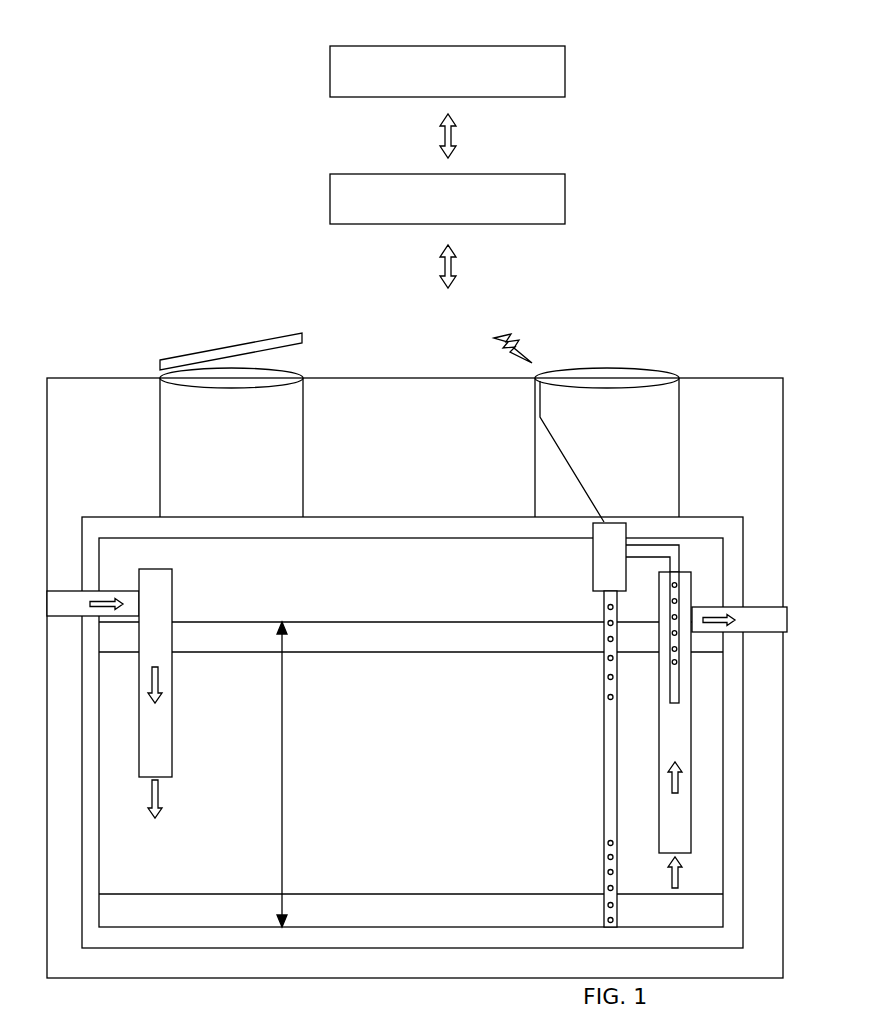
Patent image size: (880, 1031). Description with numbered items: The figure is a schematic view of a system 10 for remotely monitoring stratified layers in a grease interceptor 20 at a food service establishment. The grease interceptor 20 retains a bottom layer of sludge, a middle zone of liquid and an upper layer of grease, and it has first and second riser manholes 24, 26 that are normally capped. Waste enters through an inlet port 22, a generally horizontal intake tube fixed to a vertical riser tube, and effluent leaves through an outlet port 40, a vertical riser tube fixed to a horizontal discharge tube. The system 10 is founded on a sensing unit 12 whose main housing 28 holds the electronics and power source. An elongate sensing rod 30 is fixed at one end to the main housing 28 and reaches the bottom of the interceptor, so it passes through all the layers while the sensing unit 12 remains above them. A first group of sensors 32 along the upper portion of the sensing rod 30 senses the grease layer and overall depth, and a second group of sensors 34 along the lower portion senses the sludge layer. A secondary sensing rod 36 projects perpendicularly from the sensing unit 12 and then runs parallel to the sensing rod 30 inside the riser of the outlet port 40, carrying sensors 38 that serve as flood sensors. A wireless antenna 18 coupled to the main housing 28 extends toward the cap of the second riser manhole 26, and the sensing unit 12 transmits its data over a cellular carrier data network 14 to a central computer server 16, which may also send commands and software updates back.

The system for remotely monitoring stratified layers in grease interceptors 10 is at (636, 184).
The sensing unit 12 is at (651, 523).
The cellular carrier data network 14 is at (330, 214).
The central computer server 16 is at (330, 76).
The wireless antenna 18 is at (541, 397).
The grease interceptor 20 is at (743, 840).
The inlet port 22 is at (62, 590).
The first riser manhole 24 is at (228, 388).
The second riser manhole 26 is at (593, 368).
The main housing 28 is at (593, 565).
The sensing rod 30 is at (604, 752).
The first group of sensors 32 is at (605, 676).
The second group of sensors 34 is at (605, 857).
The secondary sensing rod 36 is at (677, 546).
The sensors 38 is at (674, 663).
The outlet port 40 is at (756, 606).